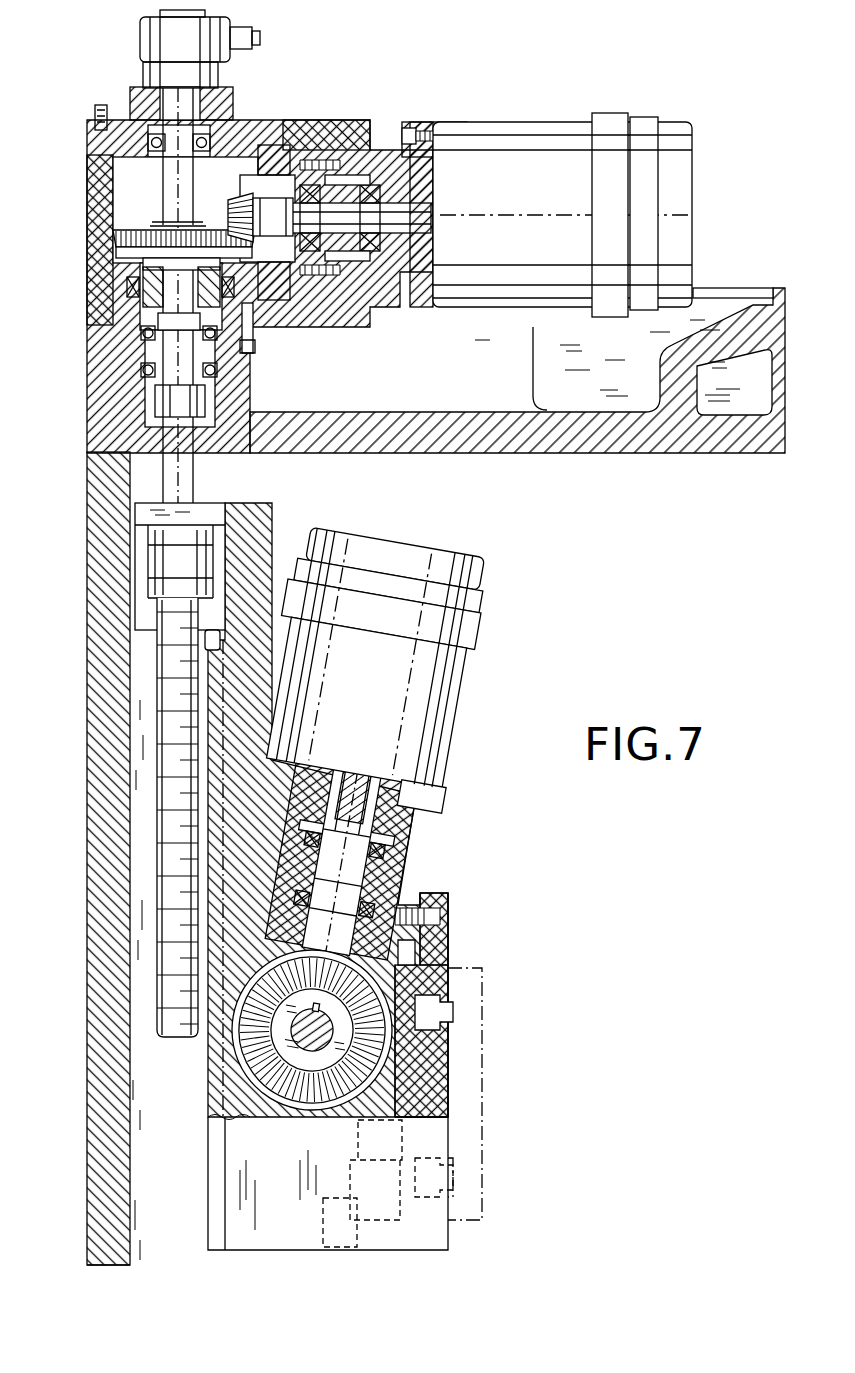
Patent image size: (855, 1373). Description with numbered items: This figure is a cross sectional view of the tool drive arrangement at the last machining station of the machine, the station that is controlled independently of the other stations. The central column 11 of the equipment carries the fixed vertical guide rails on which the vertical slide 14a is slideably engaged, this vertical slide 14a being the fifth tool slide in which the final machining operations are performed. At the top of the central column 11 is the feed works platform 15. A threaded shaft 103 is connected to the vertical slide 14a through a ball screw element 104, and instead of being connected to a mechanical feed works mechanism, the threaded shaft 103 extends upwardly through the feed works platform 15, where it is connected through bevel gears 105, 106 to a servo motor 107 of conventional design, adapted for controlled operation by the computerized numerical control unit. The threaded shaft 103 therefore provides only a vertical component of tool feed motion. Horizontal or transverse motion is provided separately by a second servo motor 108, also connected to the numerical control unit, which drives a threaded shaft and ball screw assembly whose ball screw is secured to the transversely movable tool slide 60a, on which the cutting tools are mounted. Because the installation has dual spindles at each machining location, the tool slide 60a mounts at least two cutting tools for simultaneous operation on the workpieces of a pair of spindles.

The central column 11 is at (100, 882).
The vertical slide 14a is at (253, 530).
The feed works platform 15 is at (385, 420).
The transversely movable tool slide 60a is at (435, 1080).
The threaded shaft 103 is at (157, 748).
The ball screw element 104 is at (157, 565).
The bevel gear 105 is at (133, 230).
The bevel gear 106 is at (240, 207).
The servo motor 107 is at (512, 140).
The second servo motor 108 is at (410, 676).